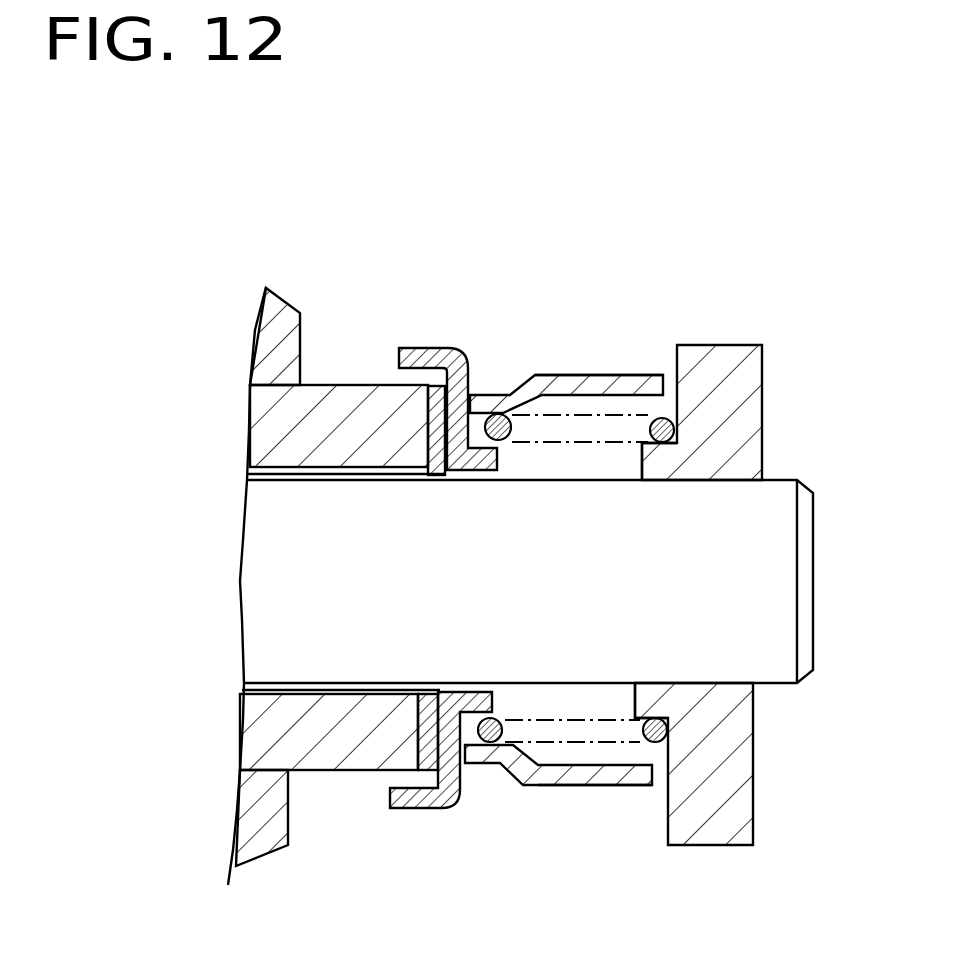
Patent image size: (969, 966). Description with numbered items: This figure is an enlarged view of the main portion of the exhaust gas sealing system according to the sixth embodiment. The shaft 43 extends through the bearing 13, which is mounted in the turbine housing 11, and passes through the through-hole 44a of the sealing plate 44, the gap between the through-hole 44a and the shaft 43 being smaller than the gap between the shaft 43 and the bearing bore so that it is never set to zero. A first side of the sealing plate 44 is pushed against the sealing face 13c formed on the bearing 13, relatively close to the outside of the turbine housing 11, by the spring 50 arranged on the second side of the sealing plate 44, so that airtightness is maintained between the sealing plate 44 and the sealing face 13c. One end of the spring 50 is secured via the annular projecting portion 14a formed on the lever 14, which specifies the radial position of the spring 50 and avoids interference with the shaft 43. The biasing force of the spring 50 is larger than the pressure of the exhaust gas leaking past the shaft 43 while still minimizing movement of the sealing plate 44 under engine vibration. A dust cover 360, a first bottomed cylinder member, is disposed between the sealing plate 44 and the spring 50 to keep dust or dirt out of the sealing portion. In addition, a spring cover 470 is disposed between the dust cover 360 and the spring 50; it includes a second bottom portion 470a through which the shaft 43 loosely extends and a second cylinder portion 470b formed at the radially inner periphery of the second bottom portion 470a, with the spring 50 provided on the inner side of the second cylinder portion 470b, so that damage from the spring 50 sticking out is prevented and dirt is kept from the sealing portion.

The turbine housing 11 is at (252, 830).
The bearing 13 is at (275, 436).
The sealing face 13c is at (422, 810).
The lever 14 is at (737, 793).
The annular projecting portion 14a is at (660, 463).
The shaft 43 is at (252, 622).
The sealing plate 44 is at (435, 388).
The through-hole 44a is at (433, 690).
The spring 50 is at (675, 421).
The dust cover 360 is at (460, 775).
The spring cover 470 is at (563, 777).
The second bottom portion 470a is at (480, 398).
The second cylinder portion 470b is at (587, 382).